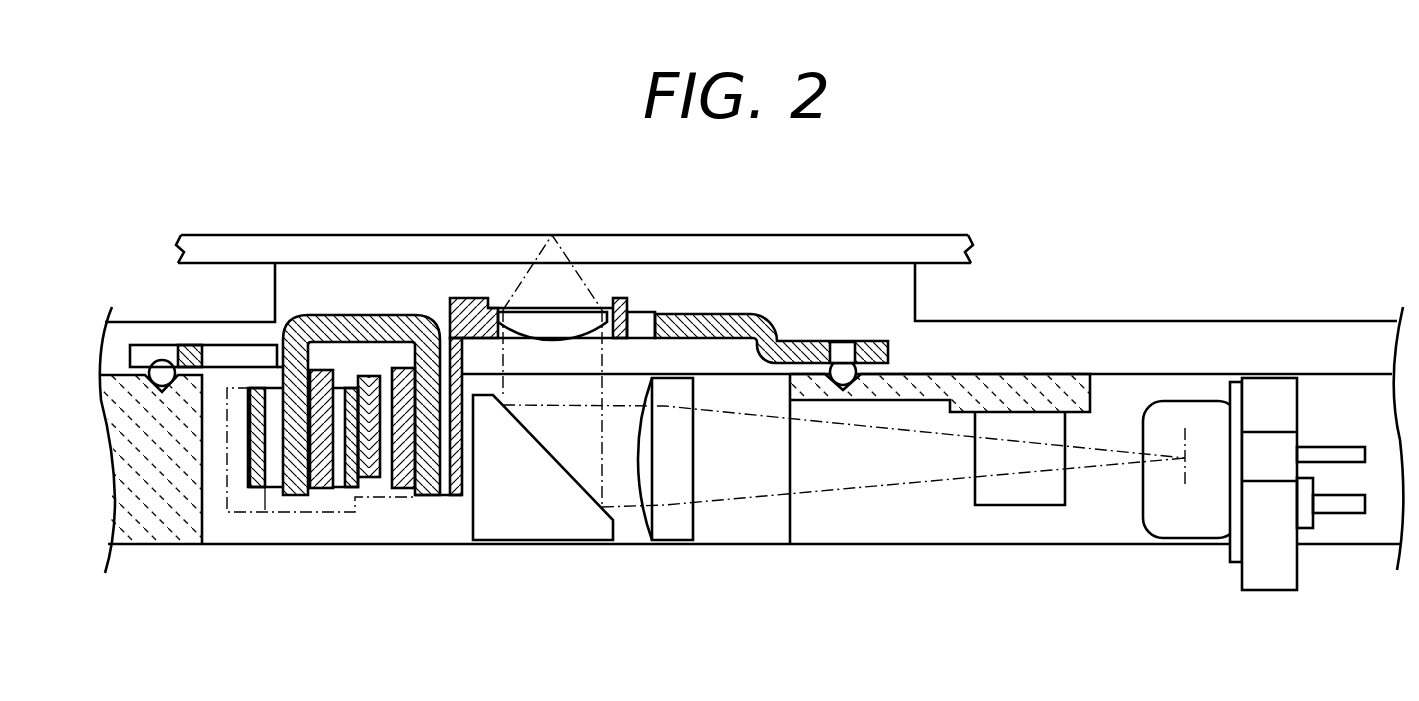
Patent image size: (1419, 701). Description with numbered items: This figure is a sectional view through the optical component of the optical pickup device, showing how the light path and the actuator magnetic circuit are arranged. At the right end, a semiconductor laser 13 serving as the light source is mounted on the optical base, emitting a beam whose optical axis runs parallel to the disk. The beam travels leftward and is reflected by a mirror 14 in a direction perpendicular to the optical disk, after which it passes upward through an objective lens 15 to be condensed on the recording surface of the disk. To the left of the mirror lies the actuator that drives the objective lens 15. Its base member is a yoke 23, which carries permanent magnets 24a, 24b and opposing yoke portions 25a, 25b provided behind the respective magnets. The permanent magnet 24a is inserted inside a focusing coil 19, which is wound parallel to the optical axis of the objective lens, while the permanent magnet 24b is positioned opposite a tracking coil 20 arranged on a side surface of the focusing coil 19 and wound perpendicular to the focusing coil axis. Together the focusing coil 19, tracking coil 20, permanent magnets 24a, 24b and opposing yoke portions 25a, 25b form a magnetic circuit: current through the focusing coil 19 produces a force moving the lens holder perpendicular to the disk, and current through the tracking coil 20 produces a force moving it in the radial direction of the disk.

The semiconductor laser 13 is at (1203, 423).
The mirror 14 is at (582, 528).
The objective lens 15 is at (563, 320).
The focusing coil 19 is at (260, 483).
The tracking coil 20 is at (367, 473).
The yoke 23 is at (230, 355).
The permanent magnet 24a is at (318, 387).
The permanent magnet 24b is at (405, 370).
The opposing yoke portion 25a is at (300, 490).
The opposing yoke portion 25b is at (428, 493).